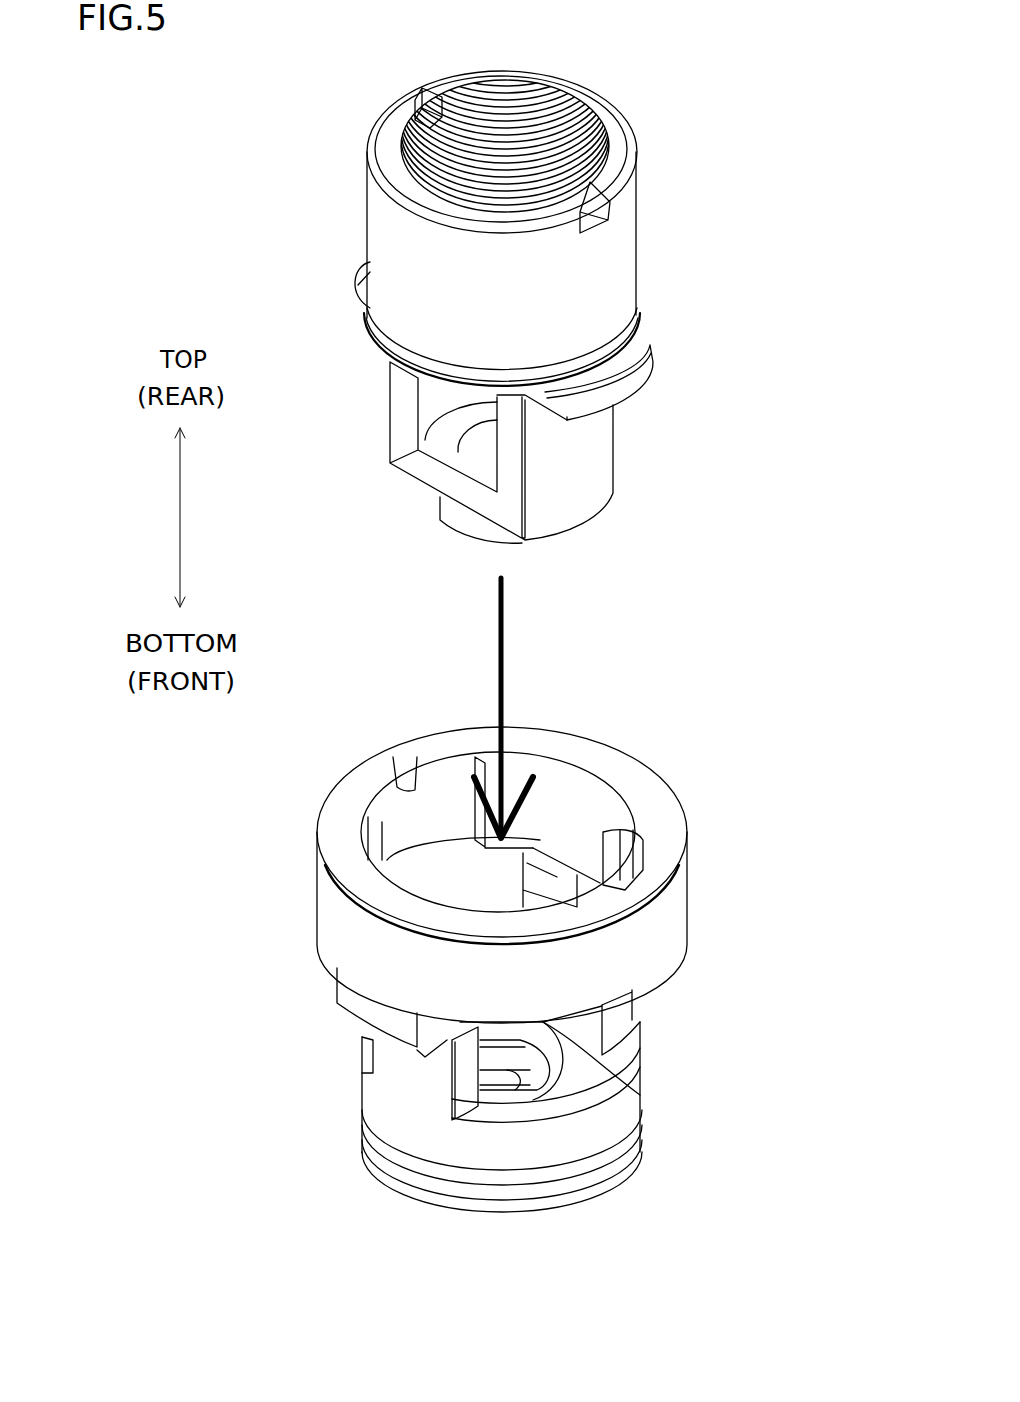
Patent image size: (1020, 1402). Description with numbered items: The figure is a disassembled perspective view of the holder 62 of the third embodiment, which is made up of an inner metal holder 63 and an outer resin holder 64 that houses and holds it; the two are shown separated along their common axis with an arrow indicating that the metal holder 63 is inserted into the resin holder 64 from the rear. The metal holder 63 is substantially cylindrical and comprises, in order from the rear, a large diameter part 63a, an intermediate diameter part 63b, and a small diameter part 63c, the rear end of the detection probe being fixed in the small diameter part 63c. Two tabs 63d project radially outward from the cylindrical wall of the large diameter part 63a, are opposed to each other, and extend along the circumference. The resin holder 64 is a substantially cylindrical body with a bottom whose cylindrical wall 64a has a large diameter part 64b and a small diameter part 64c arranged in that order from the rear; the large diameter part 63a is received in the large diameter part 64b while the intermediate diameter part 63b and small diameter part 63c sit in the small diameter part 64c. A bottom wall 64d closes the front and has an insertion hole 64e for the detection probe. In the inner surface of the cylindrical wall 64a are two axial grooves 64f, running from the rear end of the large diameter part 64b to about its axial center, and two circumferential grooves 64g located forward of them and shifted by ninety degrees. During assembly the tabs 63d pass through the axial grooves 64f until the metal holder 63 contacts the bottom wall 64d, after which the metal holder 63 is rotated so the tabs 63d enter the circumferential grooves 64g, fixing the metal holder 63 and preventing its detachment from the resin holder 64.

The holder 62 is at (504, 633).
The metal holder 63 is at (640, 58).
The large diameter part 63a is at (634, 265).
The intermediate diameter part 63b is at (598, 450).
The small diameter part 63c is at (458, 518).
The tabs 63d is at (355, 292).
The resin holder 64 is at (647, 770).
The cylindrical wall 64a is at (333, 828).
The large diameter part 64b is at (675, 917).
The small diameter part 64c is at (622, 1100).
The bottom wall 64d is at (577, 1053).
The insertion hole 64e is at (530, 1070).
The axial grooves 64f is at (413, 775).
The circumferential grooves 64g is at (530, 826).